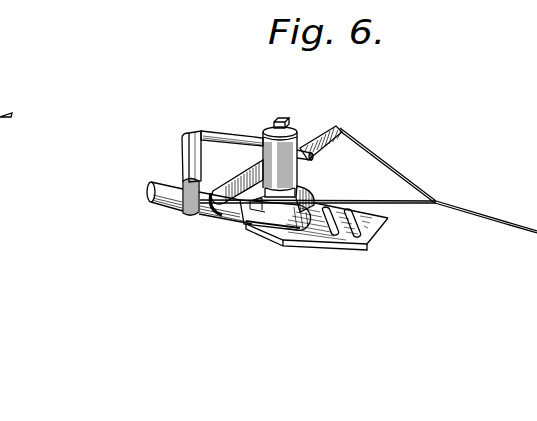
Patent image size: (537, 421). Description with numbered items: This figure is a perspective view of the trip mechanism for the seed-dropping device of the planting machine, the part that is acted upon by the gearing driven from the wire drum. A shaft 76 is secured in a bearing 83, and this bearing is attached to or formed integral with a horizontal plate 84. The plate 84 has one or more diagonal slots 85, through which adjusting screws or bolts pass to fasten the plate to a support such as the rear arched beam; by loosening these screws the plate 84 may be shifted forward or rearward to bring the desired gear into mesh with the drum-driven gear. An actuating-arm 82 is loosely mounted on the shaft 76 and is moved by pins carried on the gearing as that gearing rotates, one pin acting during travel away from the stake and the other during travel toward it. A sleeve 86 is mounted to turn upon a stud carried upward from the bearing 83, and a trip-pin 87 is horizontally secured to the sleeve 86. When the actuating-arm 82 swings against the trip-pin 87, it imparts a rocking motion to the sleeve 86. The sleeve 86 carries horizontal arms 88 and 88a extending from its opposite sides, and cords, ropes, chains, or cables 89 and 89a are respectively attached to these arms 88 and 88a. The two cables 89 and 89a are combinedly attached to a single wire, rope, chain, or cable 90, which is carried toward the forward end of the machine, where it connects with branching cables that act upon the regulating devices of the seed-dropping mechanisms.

The shaft 76 is at (172, 206).
The actuating-arm 82 is at (202, 155).
The bearing 83 is at (259, 224).
The horizontal plate 84 is at (335, 249).
The diagonal slots 85 is at (360, 229).
The sleeve 86 is at (293, 131).
The trip-pin 87 is at (253, 137).
The horizontal arm 88 is at (343, 133).
The horizontal arm 88a is at (214, 216).
The cord, rope, chain, or cable 89 is at (397, 176).
The cord, rope, chain, or cable 89a is at (350, 200).
The wire, rope, chain, or cable 90 is at (517, 212).